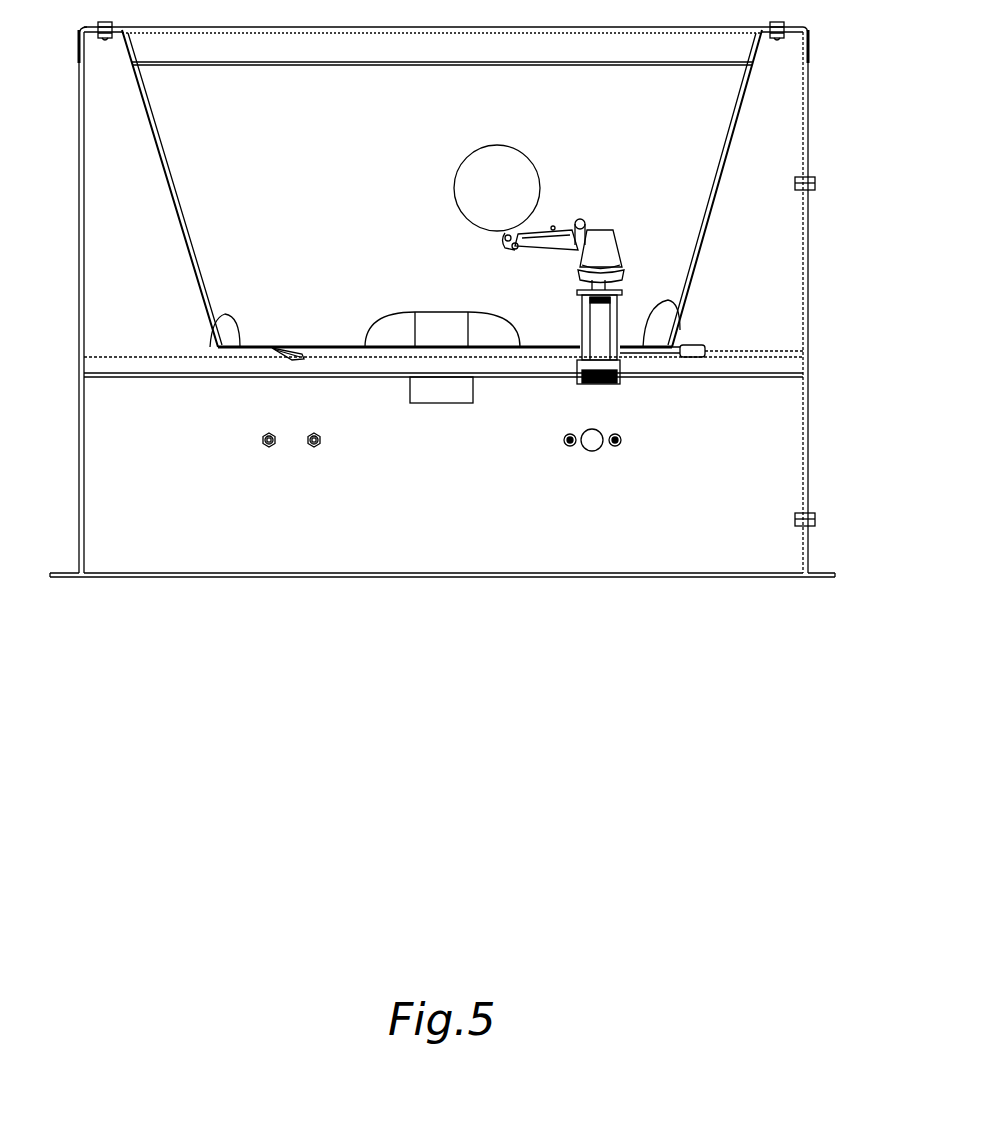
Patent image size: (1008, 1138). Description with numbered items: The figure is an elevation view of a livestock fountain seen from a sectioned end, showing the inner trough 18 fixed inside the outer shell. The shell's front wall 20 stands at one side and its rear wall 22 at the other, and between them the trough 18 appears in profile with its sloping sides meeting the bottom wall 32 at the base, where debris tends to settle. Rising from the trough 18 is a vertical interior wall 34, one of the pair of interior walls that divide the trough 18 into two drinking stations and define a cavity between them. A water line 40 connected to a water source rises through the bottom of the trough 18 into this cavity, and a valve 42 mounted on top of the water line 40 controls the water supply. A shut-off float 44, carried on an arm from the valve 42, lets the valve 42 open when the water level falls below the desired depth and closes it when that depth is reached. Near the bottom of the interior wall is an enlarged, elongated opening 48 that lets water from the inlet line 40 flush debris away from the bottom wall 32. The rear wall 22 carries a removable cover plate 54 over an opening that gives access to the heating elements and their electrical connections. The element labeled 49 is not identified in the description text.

The inner trough 18 is at (167, 192).
The front wall 20 is at (82, 303).
The rear wall 22 is at (805, 108).
The bottom wall 32 is at (266, 347).
The vertical interior wall 34 is at (371, 188).
The water line 40 is at (592, 332).
The valve 42 is at (610, 247).
The shut-off float 44 is at (500, 152).
The elongated opening 48 is at (398, 312).
The dome supports 49 is at (228, 318).
The cover plate 54 is at (807, 266).